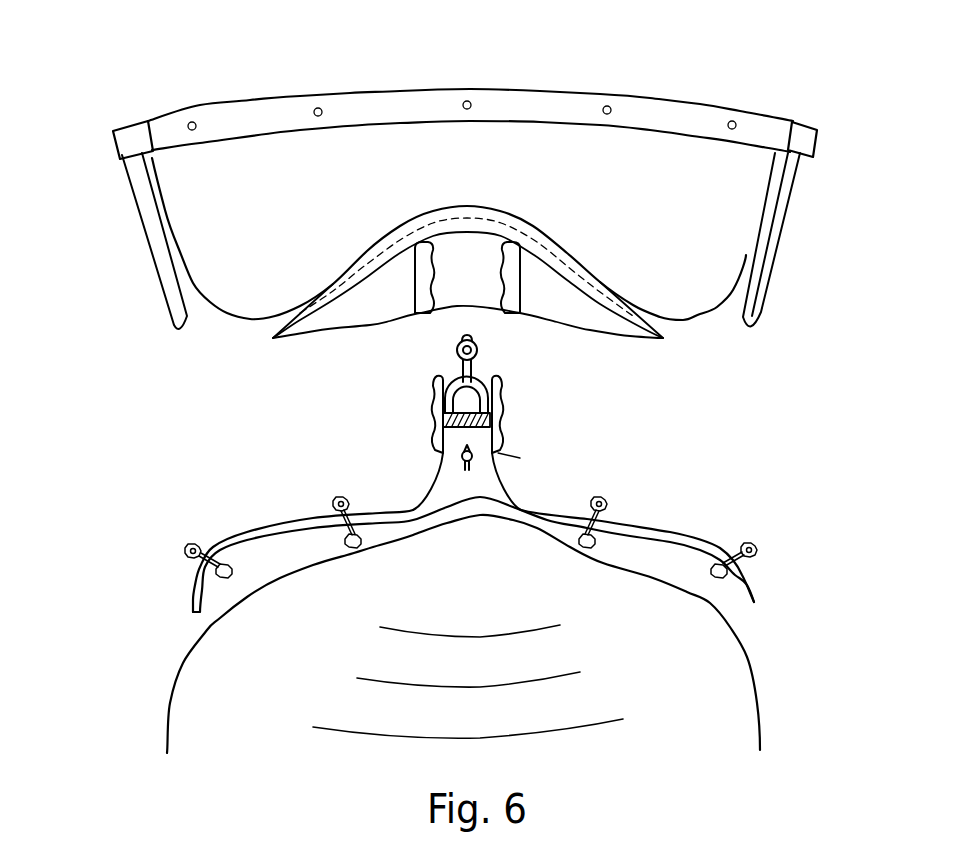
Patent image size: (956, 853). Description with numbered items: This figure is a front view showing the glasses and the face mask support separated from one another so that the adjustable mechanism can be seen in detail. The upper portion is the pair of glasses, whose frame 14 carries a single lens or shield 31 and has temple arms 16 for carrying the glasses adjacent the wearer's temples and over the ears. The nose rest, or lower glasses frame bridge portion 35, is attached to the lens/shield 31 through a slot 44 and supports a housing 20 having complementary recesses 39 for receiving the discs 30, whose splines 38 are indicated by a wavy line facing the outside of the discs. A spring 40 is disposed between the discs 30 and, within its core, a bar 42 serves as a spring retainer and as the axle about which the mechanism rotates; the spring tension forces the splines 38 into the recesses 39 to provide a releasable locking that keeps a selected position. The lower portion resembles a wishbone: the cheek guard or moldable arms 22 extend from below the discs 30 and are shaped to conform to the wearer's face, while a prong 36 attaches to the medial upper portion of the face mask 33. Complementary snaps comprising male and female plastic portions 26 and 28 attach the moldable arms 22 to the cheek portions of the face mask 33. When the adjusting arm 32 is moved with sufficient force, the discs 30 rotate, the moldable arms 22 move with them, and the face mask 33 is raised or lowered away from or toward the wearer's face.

The frame 14 is at (672, 118).
The temple arms 16 is at (158, 280).
The housing 20 is at (513, 270).
The moldable arms 22 is at (693, 540).
The male snap portion 26 is at (218, 568).
The female snap portion 28 is at (187, 548).
The discs 30 is at (500, 390).
The lens 31 is at (238, 202).
The adjusting arm 32 is at (462, 340).
The face mask 33 is at (705, 700).
The lower glasses frame bridge portion 35 is at (370, 327).
The prong 36 is at (498, 453).
The splines 38 is at (438, 447).
The recesses 39 is at (433, 258).
The spring 40 is at (440, 402).
The bar 42 is at (440, 418).
The slot 44 is at (460, 223).